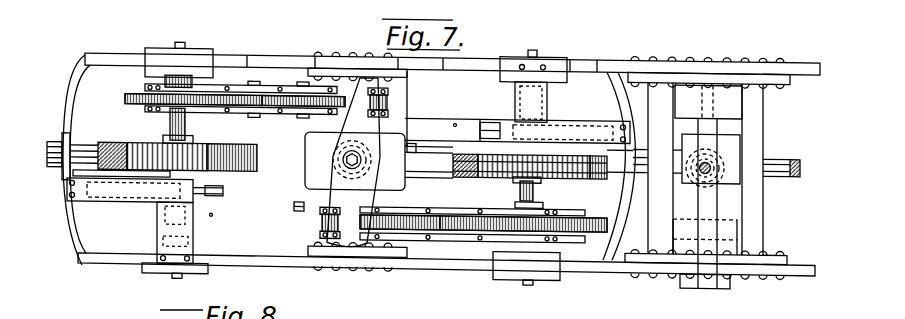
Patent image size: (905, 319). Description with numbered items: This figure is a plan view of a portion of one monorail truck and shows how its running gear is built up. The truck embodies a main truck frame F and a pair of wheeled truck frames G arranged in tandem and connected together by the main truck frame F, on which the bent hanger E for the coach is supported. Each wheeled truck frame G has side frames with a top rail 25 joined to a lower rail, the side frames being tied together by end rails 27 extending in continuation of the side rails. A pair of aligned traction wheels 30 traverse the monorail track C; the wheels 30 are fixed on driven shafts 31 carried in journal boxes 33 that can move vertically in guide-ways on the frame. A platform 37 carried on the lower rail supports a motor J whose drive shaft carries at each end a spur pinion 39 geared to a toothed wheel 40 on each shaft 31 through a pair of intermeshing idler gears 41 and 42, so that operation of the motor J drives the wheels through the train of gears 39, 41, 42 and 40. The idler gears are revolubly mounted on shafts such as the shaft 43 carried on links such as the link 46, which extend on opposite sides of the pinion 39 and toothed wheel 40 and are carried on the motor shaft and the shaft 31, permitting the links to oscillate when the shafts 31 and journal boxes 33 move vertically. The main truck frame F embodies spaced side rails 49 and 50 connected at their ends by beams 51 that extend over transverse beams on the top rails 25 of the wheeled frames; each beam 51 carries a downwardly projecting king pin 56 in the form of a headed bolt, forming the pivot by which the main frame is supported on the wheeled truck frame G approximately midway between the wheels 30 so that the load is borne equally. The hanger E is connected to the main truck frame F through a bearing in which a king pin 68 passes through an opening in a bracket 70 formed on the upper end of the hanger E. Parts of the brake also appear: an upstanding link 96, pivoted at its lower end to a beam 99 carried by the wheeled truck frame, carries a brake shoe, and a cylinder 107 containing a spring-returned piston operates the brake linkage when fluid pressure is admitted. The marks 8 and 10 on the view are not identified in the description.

The viewing direction arrow 8 is at (75, 55).
The wheeled truck frame G is at (113, 55).
The main truck frame F is at (790, 57).
The monorail track C is at (796, 155).
The bent hanger E is at (731, 286).
The motor J is at (392, 147).
The main shaft 10 is at (57, 193).
The top rail 25 is at (236, 58).
The end rail 27 is at (78, 75).
The traction wheel 30 is at (112, 155).
The driven shaft 31 is at (170, 136).
The journal box 33 is at (194, 52).
The platform 37 is at (293, 206).
The spur pinion 39 is at (390, 102).
The toothed wheel 40 is at (125, 105).
The idler gear 41 is at (293, 108).
The idler gear 42 is at (243, 108).
The shaft 43 is at (147, 91).
The link 46 is at (147, 114).
The side rail 49 is at (590, 58).
The side rail 50 is at (588, 271).
The beam 51 is at (352, 79).
The king pin 56 is at (345, 158).
The king pin 68 is at (723, 153).
The bracket 70 is at (736, 187).
The link 96 is at (235, 194).
The beam 99 is at (214, 217).
The cylinder 107 is at (105, 207).